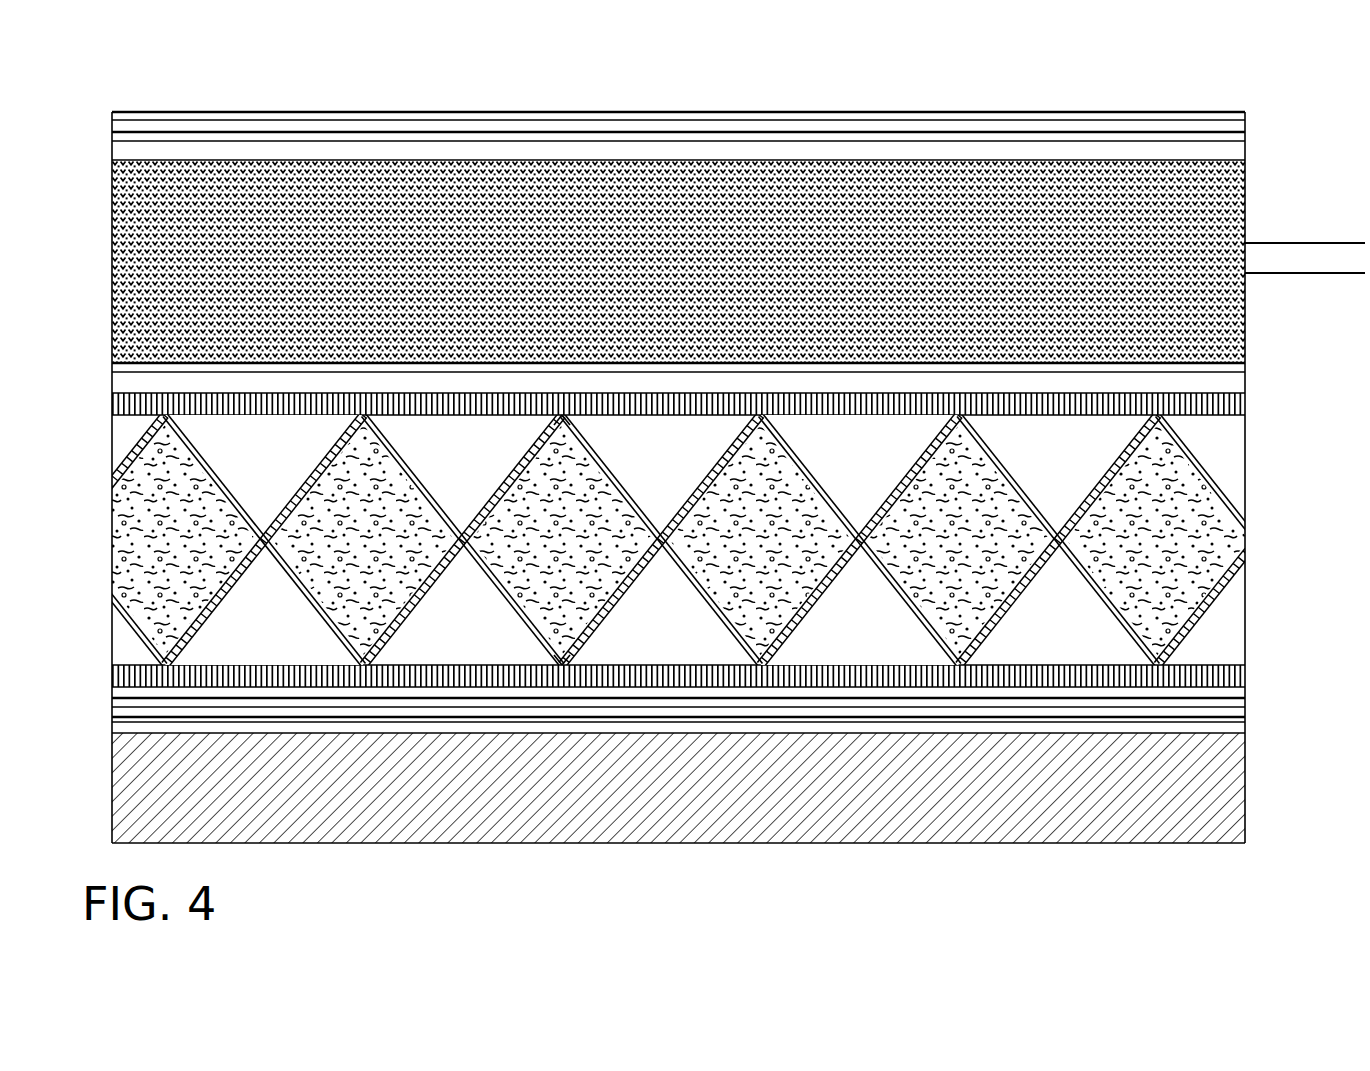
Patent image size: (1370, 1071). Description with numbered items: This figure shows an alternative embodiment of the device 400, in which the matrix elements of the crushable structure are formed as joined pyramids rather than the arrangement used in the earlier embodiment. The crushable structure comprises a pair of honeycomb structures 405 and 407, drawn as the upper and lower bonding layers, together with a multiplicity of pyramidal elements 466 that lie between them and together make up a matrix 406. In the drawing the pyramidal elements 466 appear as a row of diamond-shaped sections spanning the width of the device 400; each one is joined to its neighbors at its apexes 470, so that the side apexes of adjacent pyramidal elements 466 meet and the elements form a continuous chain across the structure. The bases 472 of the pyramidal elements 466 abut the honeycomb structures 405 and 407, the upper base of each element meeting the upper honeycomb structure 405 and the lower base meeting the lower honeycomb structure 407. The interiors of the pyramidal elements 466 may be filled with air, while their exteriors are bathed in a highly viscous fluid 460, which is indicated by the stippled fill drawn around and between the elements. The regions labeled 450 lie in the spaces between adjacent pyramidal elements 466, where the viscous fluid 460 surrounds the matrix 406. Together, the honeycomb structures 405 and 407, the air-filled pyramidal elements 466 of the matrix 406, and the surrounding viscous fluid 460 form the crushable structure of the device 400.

The device 400 is at (470, 104).
The honeycomb structure 405 is at (1243, 396).
The matrix 406 is at (618, 488).
The honeycomb structure 407 is at (1237, 673).
The spacer void region 450 is at (822, 416).
The highly viscous fluid 460 is at (1000, 583).
The pyramidal element 466 is at (400, 453).
The apex 470 is at (657, 560).
The base 472 is at (572, 422).